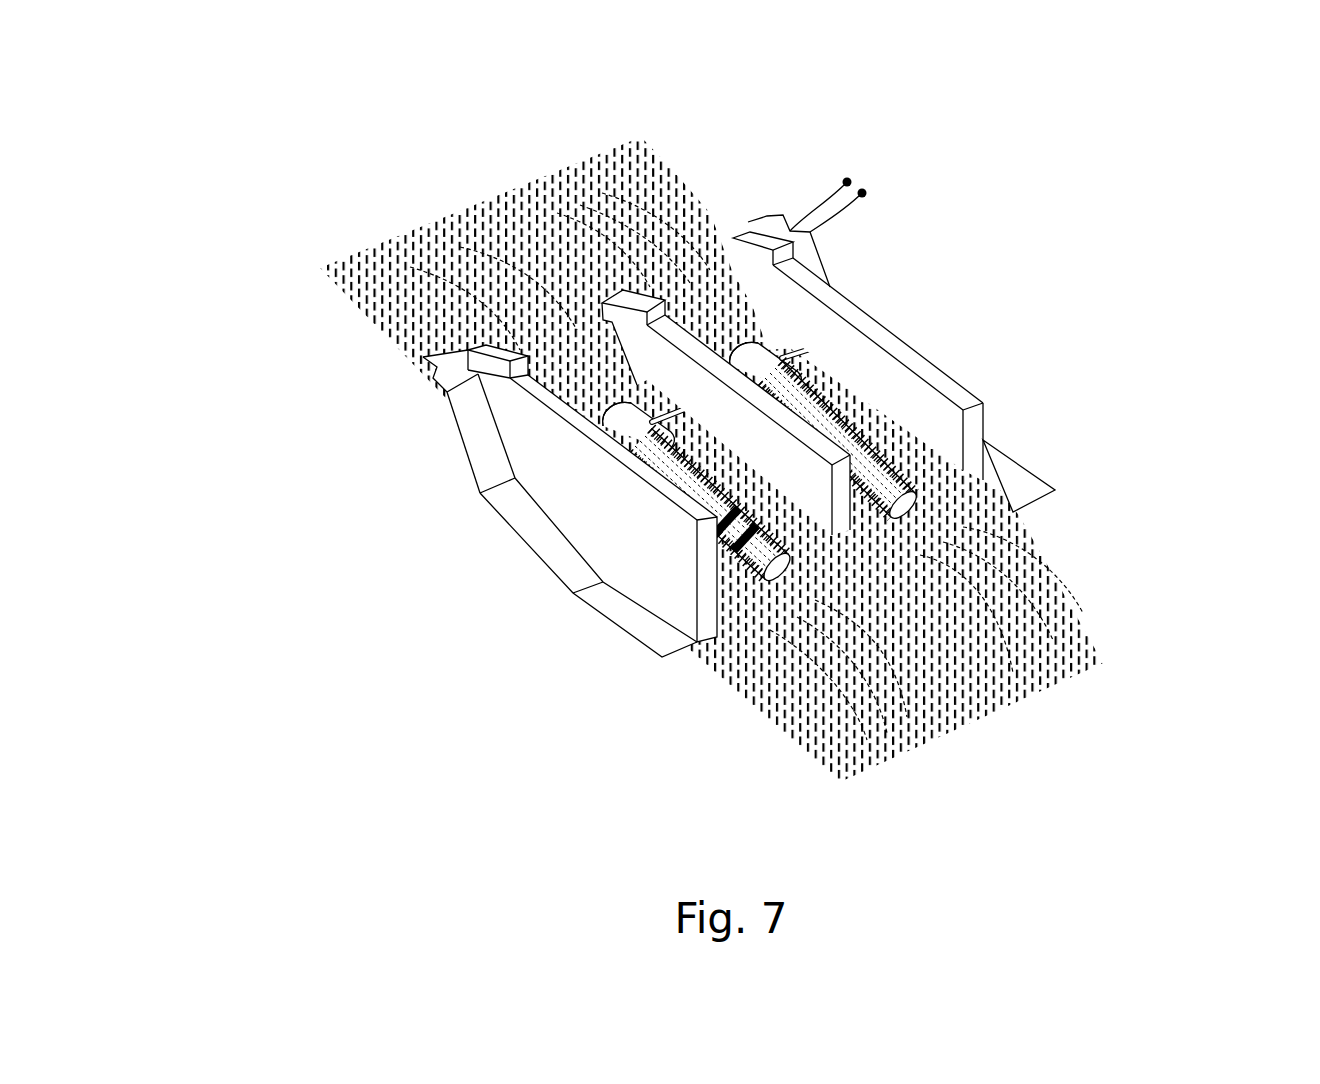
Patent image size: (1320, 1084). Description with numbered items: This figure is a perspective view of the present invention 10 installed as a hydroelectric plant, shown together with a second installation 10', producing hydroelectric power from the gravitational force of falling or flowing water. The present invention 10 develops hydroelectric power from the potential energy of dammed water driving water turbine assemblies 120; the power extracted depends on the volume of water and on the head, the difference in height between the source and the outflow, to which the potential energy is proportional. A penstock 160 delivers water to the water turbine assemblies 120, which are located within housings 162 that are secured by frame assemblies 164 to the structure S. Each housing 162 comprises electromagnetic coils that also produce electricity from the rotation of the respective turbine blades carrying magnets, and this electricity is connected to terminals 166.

The present invention 10 is at (581, 556).
The present invention 10' is at (905, 363).
The water turbine assembly 120 is at (944, 506).
The penstock 160 is at (780, 330).
The housing 162 is at (745, 345).
The frame assembly 164 is at (803, 360).
The terminal 166 is at (847, 182).
The structure S is at (952, 377).